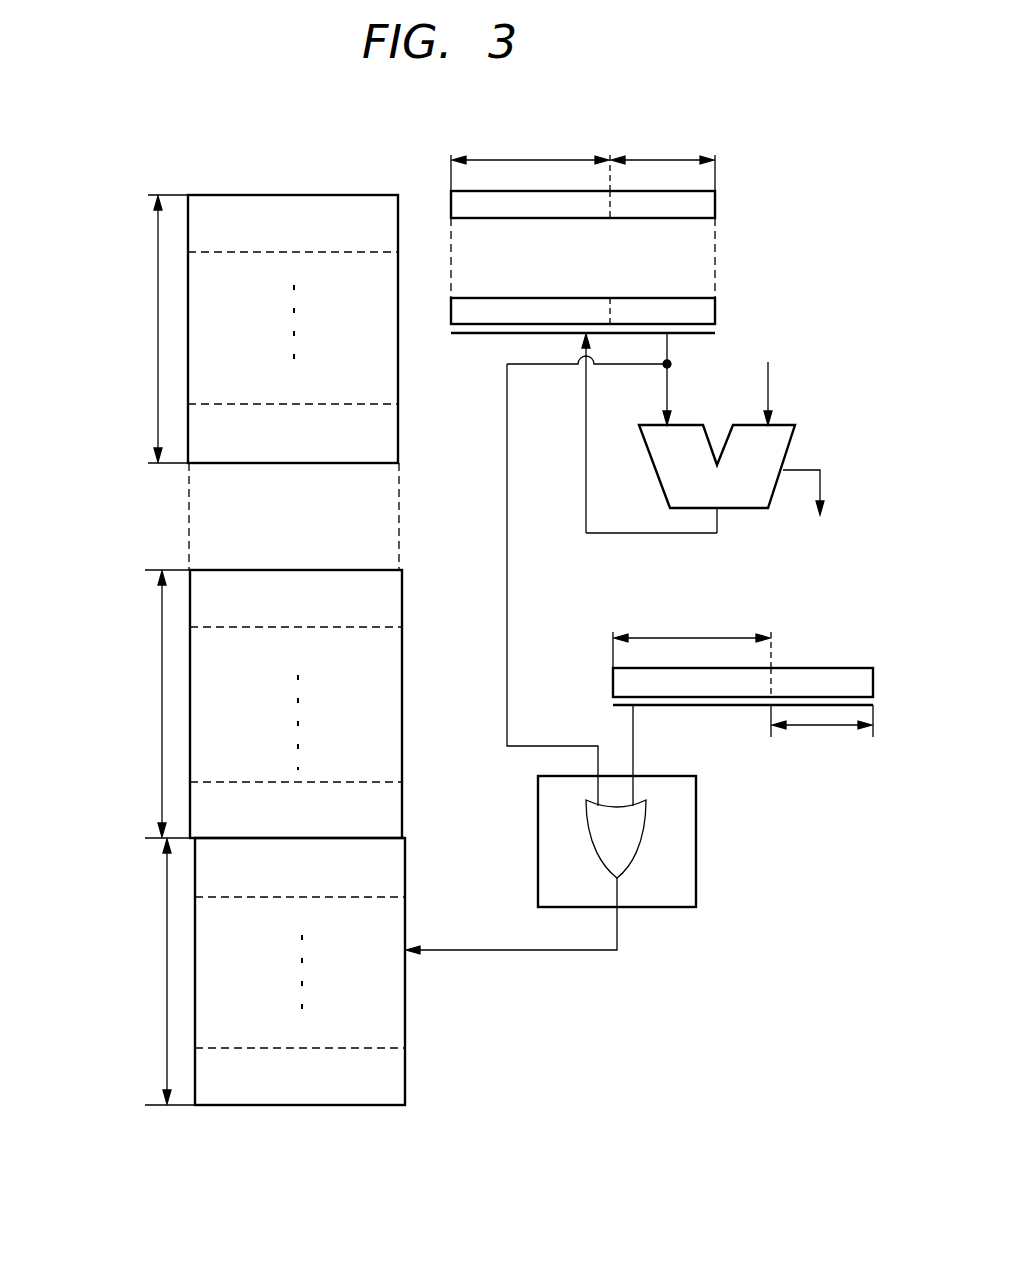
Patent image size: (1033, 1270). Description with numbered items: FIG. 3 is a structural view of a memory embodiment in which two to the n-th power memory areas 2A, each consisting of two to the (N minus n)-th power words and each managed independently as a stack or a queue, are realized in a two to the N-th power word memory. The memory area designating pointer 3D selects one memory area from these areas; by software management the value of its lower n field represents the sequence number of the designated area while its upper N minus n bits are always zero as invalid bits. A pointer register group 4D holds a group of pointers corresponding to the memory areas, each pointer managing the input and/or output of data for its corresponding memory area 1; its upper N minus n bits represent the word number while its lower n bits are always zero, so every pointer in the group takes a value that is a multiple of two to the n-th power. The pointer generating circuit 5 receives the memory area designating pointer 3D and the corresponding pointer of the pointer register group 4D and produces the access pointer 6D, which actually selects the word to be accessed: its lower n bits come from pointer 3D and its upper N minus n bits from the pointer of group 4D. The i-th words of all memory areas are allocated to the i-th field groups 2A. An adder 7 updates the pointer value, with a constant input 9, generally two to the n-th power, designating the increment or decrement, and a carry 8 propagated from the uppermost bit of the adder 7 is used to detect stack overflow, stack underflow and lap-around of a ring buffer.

The memory area 1 is at (330, 195).
The field group 2A is at (398, 380).
The memory area designating pointer 3D is at (728, 706).
The pointer register group 4D is at (715, 208).
The pointer generating circuit 5 is at (696, 886).
The access pointer 6D is at (555, 952).
The adder 7 is at (755, 510).
The carry 8 is at (820, 484).
The constant input 9 is at (768, 392).